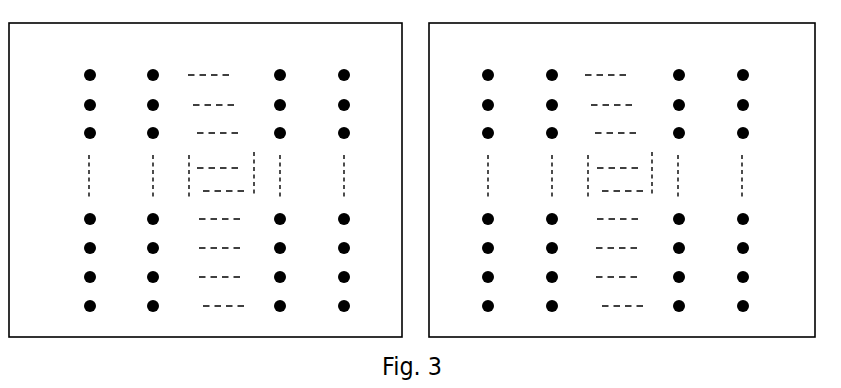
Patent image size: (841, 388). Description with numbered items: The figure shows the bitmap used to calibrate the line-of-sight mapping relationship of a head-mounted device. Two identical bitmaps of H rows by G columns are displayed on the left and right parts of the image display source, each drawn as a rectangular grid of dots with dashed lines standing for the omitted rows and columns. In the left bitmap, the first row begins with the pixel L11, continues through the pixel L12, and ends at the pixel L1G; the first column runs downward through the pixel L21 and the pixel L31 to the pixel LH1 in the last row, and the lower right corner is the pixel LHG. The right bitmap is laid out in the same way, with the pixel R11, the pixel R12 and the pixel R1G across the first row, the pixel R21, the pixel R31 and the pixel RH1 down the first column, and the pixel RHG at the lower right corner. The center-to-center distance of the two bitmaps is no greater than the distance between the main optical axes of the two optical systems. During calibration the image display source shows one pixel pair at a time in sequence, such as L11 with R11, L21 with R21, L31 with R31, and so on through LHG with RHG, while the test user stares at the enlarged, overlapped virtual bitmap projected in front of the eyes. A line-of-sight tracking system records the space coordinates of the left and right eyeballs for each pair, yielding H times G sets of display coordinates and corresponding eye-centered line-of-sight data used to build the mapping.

The left bitmap pixel L11 is at (81, 64).
The left bitmap pixel L12 is at (149, 61).
The left bitmap pixel L1G is at (337, 61).
The left bitmap pixel L21 is at (75, 104).
The left bitmap pixel L31 is at (75, 133).
The left bitmap pixel LH1 is at (72, 307).
The left bitmap pixel LHG is at (364, 312).
The right bitmap pixel R11 is at (479, 64).
The right bitmap pixel R12 is at (549, 61).
The right bitmap pixel R1G is at (735, 61).
The right bitmap pixel R21 is at (473, 104).
The right bitmap pixel R31 is at (473, 133).
The right bitmap pixel RH1 is at (470, 306).
The right bitmap pixel RHG is at (762, 312).